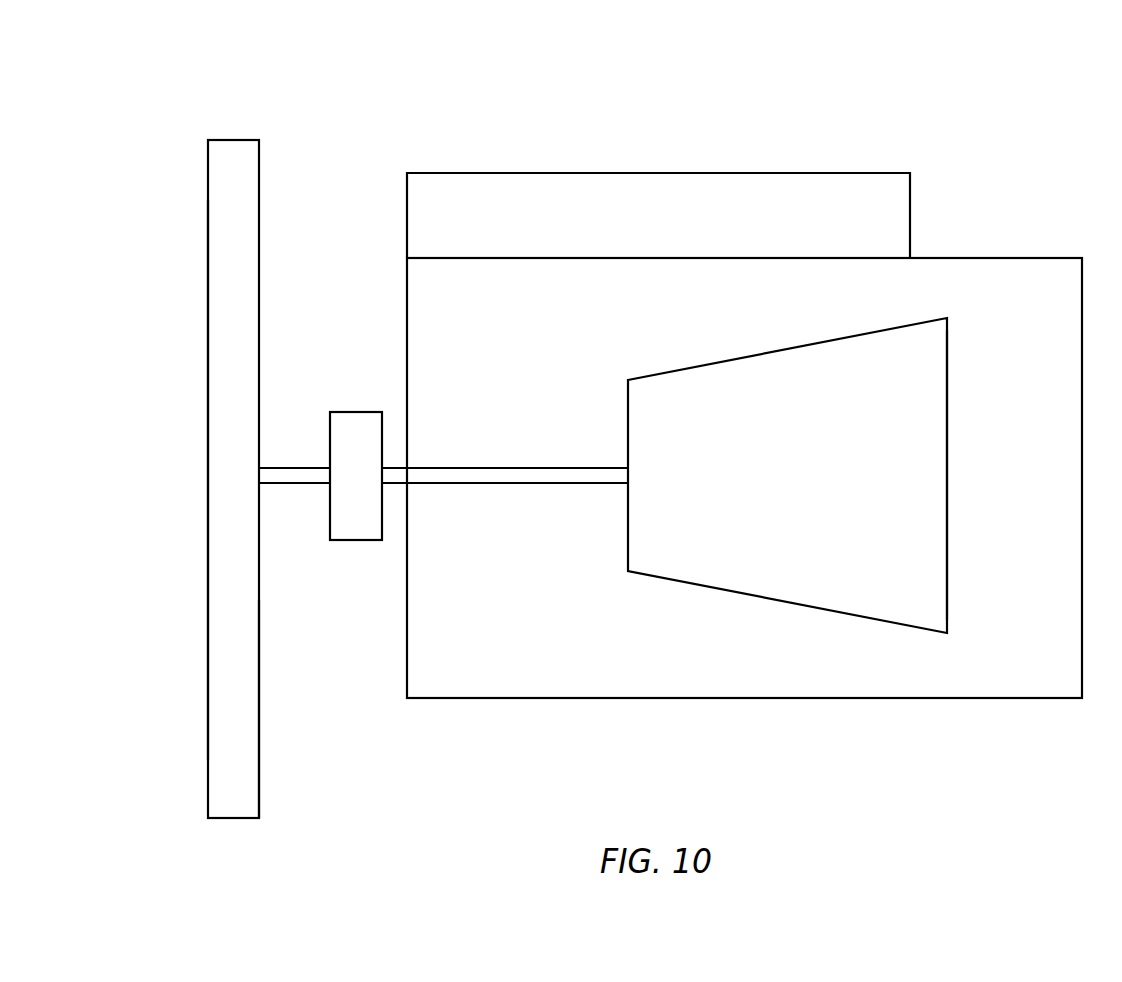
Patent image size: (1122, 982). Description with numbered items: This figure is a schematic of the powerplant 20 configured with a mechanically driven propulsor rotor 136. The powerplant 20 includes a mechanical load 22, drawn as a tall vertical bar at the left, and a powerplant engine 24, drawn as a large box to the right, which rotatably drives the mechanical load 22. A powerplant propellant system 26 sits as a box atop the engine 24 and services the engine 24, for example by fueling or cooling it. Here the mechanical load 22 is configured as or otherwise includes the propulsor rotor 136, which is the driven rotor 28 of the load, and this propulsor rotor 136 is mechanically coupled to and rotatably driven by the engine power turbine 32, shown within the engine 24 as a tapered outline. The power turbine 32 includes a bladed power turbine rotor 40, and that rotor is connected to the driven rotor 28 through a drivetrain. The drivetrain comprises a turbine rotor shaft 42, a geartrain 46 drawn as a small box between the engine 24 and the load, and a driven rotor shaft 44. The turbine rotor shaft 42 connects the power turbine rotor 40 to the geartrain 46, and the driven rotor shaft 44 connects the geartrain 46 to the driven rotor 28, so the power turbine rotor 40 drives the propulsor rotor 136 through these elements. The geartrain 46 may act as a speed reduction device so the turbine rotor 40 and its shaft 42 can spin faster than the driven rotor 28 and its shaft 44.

The powerplant 20 is at (977, 127).
The mechanical load 22 is at (203, 127).
The powerplant engine 24 is at (622, 705).
The powerplant propellant system 26 is at (688, 173).
The driven rotor 28 is at (208, 258).
The engine power turbine 32 is at (960, 318).
The power turbine rotor 40 is at (947, 495).
The turbine rotor shaft 42 is at (465, 467).
The driven rotor shaft 44 is at (292, 467).
The geartrain 46 is at (353, 412).
The mechanically driven propulsor rotor 136 is at (195, 748).